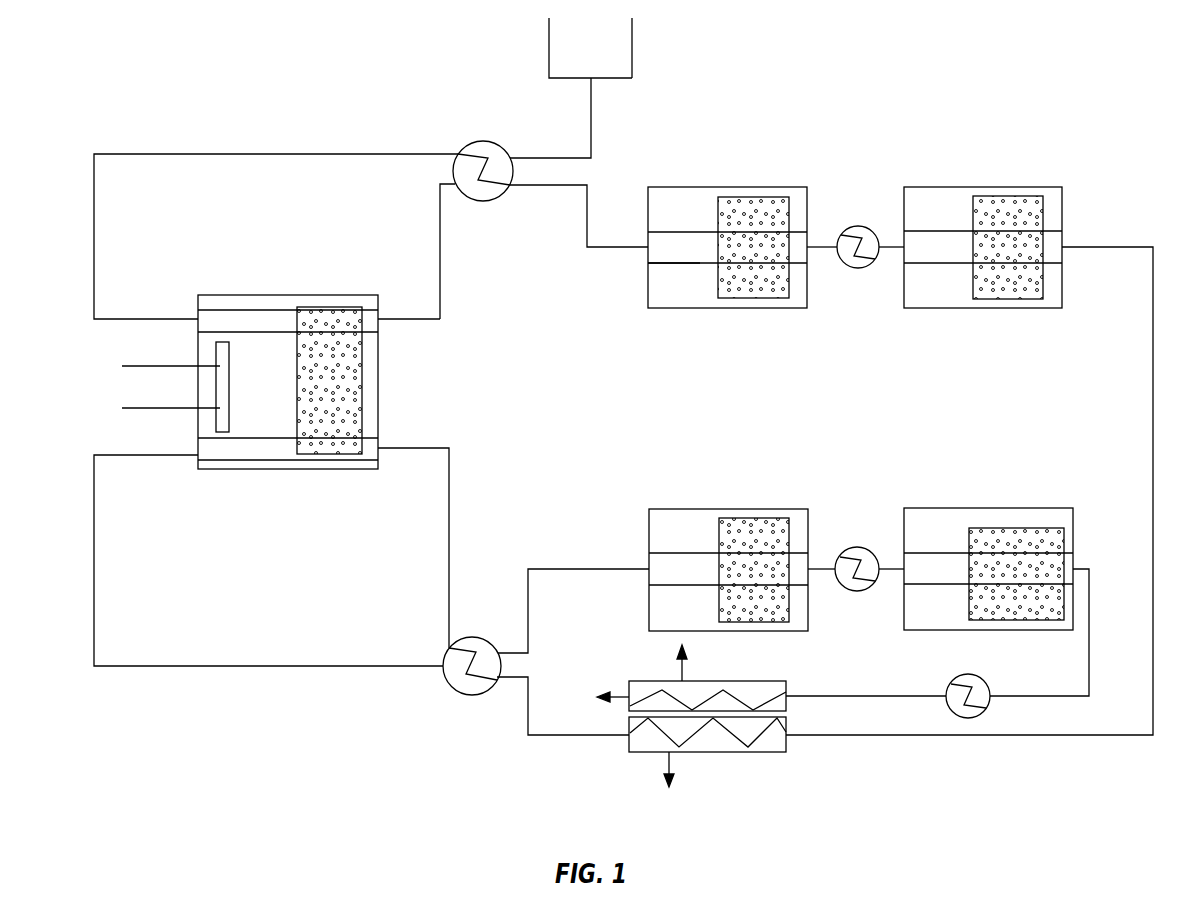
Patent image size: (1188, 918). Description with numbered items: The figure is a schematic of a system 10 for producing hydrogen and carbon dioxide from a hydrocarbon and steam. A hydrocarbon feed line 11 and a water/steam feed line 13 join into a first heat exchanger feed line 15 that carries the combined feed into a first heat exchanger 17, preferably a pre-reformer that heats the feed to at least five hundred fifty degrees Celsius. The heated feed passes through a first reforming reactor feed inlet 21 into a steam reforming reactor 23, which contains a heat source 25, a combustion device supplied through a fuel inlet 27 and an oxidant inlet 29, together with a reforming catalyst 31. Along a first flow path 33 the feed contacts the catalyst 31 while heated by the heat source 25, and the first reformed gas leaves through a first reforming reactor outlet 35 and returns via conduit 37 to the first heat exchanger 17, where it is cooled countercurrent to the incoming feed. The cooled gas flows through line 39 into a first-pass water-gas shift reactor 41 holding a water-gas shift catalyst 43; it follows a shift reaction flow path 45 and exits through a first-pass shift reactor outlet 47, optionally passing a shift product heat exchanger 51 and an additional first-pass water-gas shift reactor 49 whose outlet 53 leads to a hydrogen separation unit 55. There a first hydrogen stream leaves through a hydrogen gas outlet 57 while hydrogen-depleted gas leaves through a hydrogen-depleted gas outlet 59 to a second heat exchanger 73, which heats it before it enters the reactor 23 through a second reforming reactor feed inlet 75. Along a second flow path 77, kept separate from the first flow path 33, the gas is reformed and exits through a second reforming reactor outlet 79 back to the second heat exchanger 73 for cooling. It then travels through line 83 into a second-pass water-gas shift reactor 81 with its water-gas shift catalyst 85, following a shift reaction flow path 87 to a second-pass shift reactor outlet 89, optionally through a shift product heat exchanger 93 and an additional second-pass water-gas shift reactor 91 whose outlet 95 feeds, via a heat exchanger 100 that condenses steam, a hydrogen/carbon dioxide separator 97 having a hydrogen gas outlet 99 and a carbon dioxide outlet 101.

The system 10 is at (168, 86).
The hydrocarbon feed line 11 is at (549, 47).
The water/steam feed line 13 is at (632, 47).
The first heat exchanger feed line 15 is at (591, 160).
The first heat exchanger 17 is at (477, 142).
The first reforming reactor feed inlet 21 is at (122, 318).
The steam reforming reactor 23 is at (262, 296).
The heat source 25 is at (225, 387).
The fuel inlet 27 is at (132, 366).
The oxidant inlet 29 is at (130, 408).
The reforming catalyst 31 is at (347, 382).
The first flow path 33 is at (240, 311).
The first reforming reactor outlet 35 is at (425, 320).
The outlet conduit 37 is at (441, 280).
The line 39 is at (583, 213).
The first-pass water-gas shift reactor 41 is at (695, 187).
The water-gas shift catalyst 43 is at (752, 212).
The shift reaction flow path 45 is at (657, 254).
The first-pass shift reactor outlet 47 is at (823, 240).
The additional first-pass water-gas shift reactor 49 is at (937, 187).
The shift product heat exchanger 51 is at (862, 268).
The outlet 53 is at (1152, 380).
The hydrogen separation unit 55 is at (770, 753).
The hydrogen gas outlet 57 is at (670, 762).
The hydrogen-depleted gas outlet 59 is at (583, 736).
The second heat exchanger 73 is at (473, 694).
The second reforming reactor feed inlet 75 is at (135, 457).
The second flow path 77 is at (265, 452).
The second reforming reactor outlet 79 is at (430, 448).
The second-pass water-gas shift reactor 81 is at (683, 509).
The line 83 is at (527, 612).
The water-gas shift catalyst 85 is at (753, 530).
The shift reaction flow path 87 is at (660, 568).
The second-pass shift reactor outlet 89 is at (822, 566).
The additional second-pass water-gas shift reactor 91 is at (945, 508).
The shift product heat exchanger 93 is at (857, 593).
The outlet 95 is at (1081, 568).
The hydrogen/carbon dioxide separator 97 is at (773, 681).
The hydrogen gas outlet 99 is at (686, 672).
The heat exchanger 100 is at (968, 675).
The carbon dioxide outlet 101 is at (619, 692).